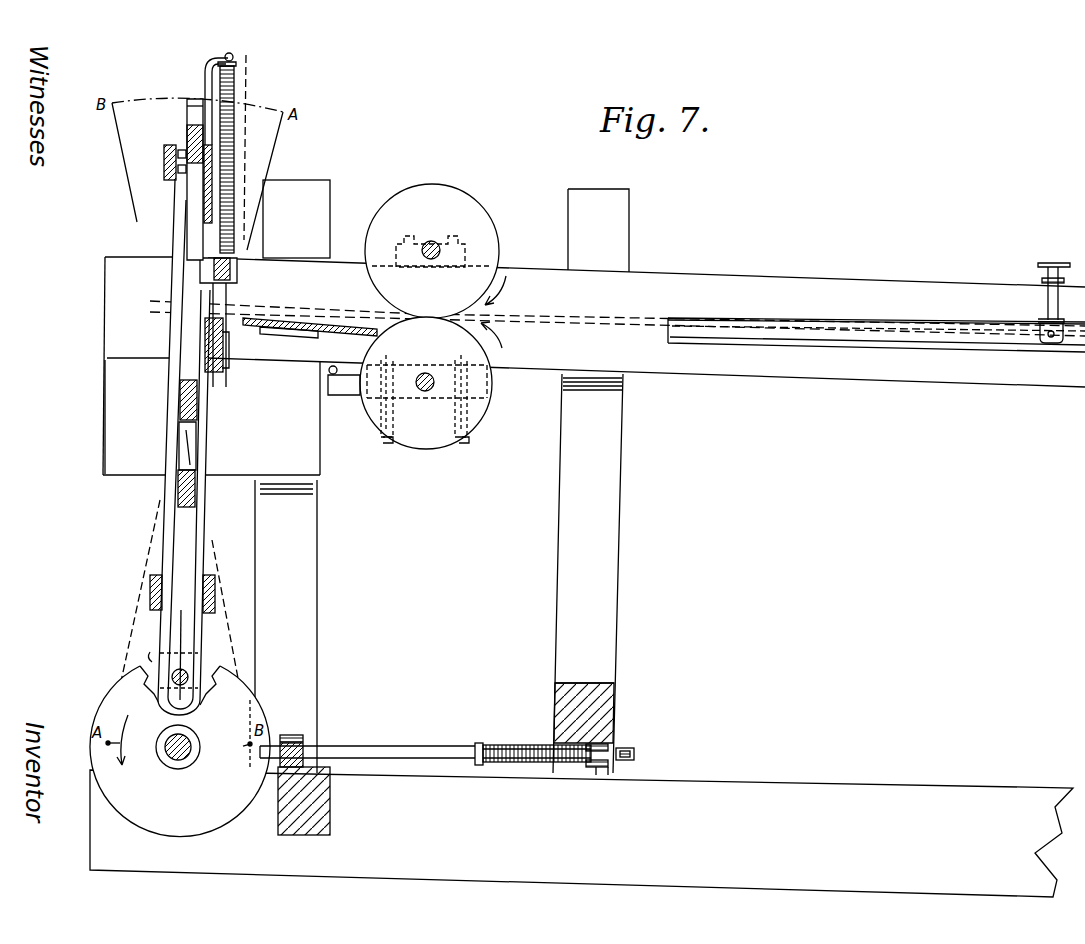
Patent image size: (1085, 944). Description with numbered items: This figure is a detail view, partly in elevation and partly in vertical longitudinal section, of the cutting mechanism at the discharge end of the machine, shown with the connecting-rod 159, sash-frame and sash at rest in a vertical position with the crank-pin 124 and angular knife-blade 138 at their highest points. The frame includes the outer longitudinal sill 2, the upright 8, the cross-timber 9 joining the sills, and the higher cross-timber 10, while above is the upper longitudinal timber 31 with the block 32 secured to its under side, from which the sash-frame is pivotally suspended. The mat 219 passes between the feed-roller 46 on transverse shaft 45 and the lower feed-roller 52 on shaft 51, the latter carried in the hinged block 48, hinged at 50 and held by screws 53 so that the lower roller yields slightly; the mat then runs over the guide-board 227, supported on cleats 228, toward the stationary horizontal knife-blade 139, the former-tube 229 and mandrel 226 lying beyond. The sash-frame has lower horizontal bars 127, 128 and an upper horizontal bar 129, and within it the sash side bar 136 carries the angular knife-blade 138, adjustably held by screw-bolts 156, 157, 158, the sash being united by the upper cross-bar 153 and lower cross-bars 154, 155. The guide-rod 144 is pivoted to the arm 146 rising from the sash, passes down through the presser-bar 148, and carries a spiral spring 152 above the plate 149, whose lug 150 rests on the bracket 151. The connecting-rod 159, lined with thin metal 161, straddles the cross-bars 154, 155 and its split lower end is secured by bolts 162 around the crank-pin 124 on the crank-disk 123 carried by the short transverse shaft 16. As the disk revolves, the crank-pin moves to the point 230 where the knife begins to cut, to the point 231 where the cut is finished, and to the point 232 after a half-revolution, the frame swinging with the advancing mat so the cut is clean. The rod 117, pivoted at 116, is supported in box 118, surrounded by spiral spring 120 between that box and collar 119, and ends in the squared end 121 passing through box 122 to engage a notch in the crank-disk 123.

The outer longitudinal sill 2 is at (581, 833).
The upright 8 is at (262, 68).
The cross-timber 9 is at (330, 812).
The cross-timber 10 is at (596, 697).
The short transverse shaft 16 is at (180, 756).
The upper longitudinal timber 31 is at (108, 321).
The block 32 is at (105, 425).
The transverse shaft 45 is at (430, 258).
The feed-roller 46 is at (432, 251).
The hinged block 48 is at (345, 395).
The hinge 50 is at (330, 375).
The transverse shaft 51 is at (428, 378).
The feed-roller 52 is at (426, 383).
The screws 53 is at (458, 447).
The pivotal connection 116 is at (626, 748).
The rod 117 is at (594, 768).
The box 118 is at (603, 775).
The collar 119 is at (479, 766).
The spiral spring 120 is at (522, 746).
The squared end 121 is at (289, 738).
The box 122 is at (305, 760).
The crank-disk 123 is at (180, 751).
The crank-pin 124 is at (140, 660).
The lower horizontal bar 127 is at (150, 598).
The lower horizontal bar 128 is at (216, 584).
The upper horizontal bar 129 is at (164, 163).
The sash side bar 136 is at (200, 270).
The angular knife-blade 138 is at (204, 202).
The stationary horizontal knife-blade 139 is at (205, 355).
The guide-rod 144 is at (222, 386).
The arm 146 is at (205, 80).
The presser-bar 148 is at (232, 262).
The plate 149 is at (218, 258).
The lug 150 is at (208, 258).
The bracket 151 is at (212, 276).
The spiral spring 152 is at (232, 156).
The upper cross-bar 153 is at (187, 134).
The lower cross-bar 154 is at (179, 410).
The lower cross-bar 155 is at (172, 516).
The screw-bolt 156 is at (170, 176).
The screw-bolt 157 is at (180, 178).
The screw-bolt 158 is at (178, 148).
The connecting-rod 159 is at (172, 634).
The thin metal lining 161 is at (160, 559).
The bolts 162 is at (198, 656).
The mat 219 is at (562, 308).
The mandrel 226 is at (857, 333).
The guide-board 227 is at (338, 333).
The cleats 228 is at (285, 334).
The former-tube 229 is at (752, 345).
The point on disk 230 is at (128, 744).
The point on disk 231 is at (214, 815).
The point on disk 232 is at (232, 747).